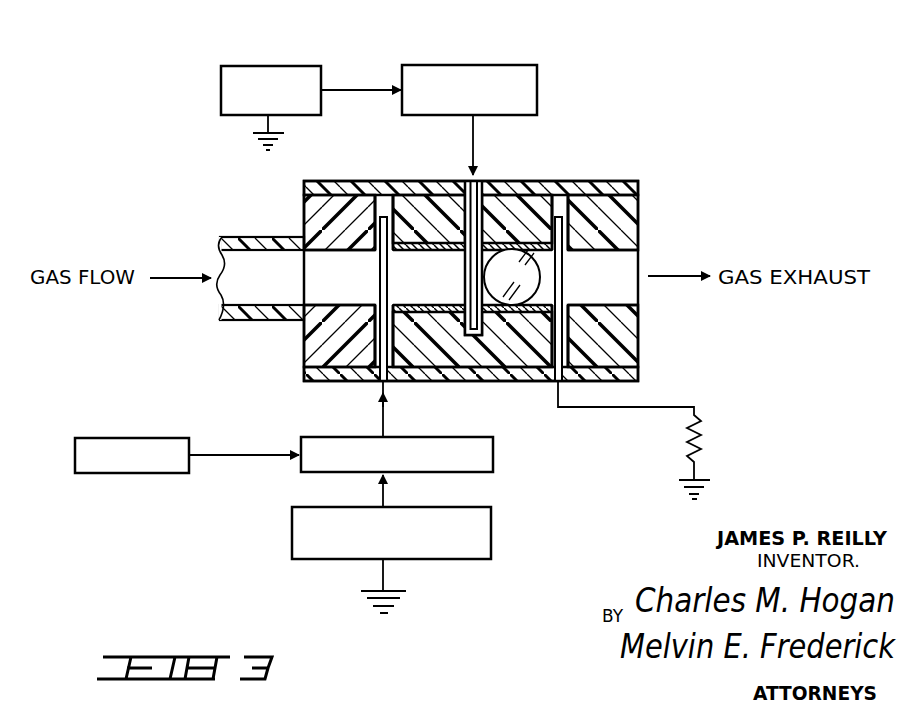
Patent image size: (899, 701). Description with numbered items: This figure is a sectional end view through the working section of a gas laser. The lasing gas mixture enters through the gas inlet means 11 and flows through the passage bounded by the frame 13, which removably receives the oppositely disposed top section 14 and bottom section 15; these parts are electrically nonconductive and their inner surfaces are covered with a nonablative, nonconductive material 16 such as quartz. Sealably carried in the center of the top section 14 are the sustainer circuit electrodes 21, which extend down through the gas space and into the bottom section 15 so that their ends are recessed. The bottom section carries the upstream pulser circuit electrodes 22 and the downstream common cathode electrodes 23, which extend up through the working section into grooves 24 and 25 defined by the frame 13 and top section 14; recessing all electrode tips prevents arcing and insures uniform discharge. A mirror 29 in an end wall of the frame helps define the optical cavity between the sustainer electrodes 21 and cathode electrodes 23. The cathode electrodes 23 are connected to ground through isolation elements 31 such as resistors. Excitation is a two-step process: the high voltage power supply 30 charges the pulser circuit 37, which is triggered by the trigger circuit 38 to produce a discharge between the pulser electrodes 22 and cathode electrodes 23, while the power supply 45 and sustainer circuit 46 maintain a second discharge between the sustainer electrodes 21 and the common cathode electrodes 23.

The gas inlet means 11 is at (251, 237).
The frame 13 is at (304, 212).
The top section 14 is at (356, 181).
The bottom section 15 is at (487, 383).
The nonablative electrically nonconductive material 16 is at (431, 305).
The sustainer circuit electrodes 21 is at (464, 288).
The pulser circuit electrodes 22 is at (379, 280).
The common cathode electrodes 23 is at (563, 275).
The groove 24 is at (391, 193).
The groove 25 is at (558, 193).
The mirror 29 is at (519, 295).
The high voltage power supply 30 is at (491, 541).
The isolation elements 31 is at (700, 440).
The pulser circuit 37 is at (328, 437).
The trigger circuit 38 is at (128, 474).
The power supply 45 is at (267, 66).
The sustainer circuit 46 is at (480, 65).